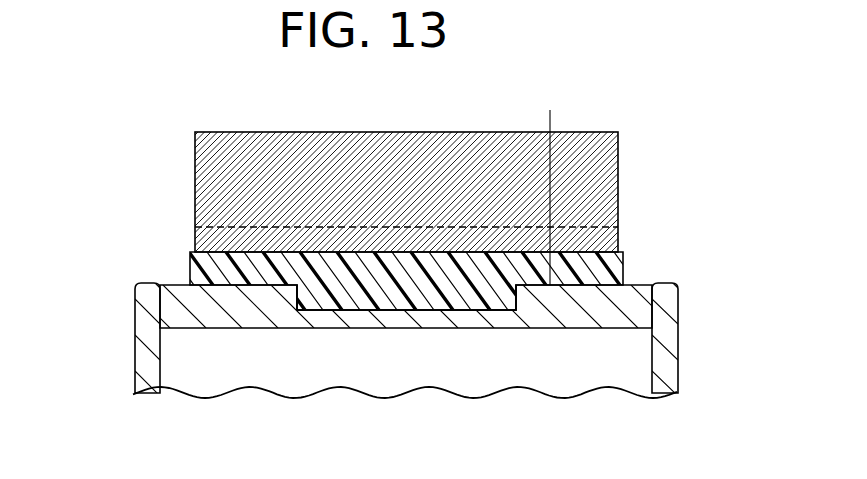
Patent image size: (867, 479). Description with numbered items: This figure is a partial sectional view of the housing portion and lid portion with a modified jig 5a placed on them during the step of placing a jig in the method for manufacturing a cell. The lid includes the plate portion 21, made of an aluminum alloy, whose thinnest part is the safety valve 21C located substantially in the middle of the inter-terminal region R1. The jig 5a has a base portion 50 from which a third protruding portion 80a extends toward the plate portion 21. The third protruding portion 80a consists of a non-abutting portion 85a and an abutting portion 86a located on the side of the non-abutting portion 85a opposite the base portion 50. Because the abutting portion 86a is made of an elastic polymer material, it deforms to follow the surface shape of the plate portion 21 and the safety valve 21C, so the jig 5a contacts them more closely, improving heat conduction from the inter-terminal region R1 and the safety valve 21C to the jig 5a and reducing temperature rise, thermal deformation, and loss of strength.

The base portion 50 is at (358, 152).
The non-abutting portion 85a is at (613, 241).
The abutting portion 86a is at (617, 265).
The plate portion 21 is at (545, 317).
The safety valve 21C is at (395, 317).
The inter-terminal region R1 is at (556, 185).
The jig 5a is at (672, 128).
The third protruding portion 80a is at (143, 256).